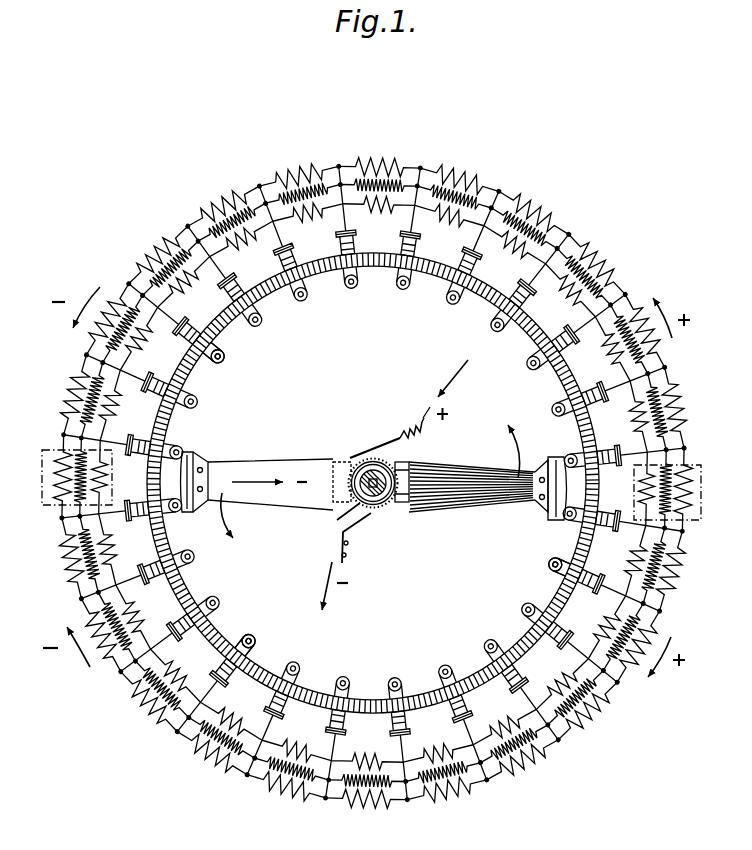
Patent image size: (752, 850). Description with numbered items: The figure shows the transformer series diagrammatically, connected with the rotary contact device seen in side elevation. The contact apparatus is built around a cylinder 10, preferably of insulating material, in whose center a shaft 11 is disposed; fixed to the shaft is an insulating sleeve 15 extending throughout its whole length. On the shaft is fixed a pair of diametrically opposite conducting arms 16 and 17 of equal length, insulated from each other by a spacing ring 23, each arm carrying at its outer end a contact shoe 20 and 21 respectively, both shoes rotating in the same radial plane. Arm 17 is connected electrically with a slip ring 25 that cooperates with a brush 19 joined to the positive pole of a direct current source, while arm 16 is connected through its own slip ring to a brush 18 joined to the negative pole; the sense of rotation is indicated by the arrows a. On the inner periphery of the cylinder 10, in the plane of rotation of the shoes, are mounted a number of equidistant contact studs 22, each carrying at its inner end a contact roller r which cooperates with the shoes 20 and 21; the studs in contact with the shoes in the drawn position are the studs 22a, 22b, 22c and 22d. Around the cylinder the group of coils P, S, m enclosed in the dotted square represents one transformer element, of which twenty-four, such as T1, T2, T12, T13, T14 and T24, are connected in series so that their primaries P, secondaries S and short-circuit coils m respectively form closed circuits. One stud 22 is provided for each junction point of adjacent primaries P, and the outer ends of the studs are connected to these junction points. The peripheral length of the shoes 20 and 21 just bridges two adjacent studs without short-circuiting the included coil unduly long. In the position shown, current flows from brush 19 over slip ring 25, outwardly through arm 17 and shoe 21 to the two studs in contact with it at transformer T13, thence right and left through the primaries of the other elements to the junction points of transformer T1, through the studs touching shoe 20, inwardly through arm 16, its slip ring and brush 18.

The cylinder 10 is at (188, 378).
The contact studs 22 is at (303, 288).
The contact 22a is at (168, 443).
The contact 22b is at (167, 511).
The contact 22c is at (579, 522).
The contact 22d is at (584, 458).
The contact roller r is at (230, 349).
The short-circuit coil m is at (185, 287).
The secondary S is at (178, 247).
The primary P is at (150, 262).
The transformer element T1 is at (43, 467).
The transformer element T2 is at (74, 391).
The transformer element T12 is at (683, 408).
The transformer element T13 is at (702, 481).
The transformer element T14 is at (678, 578).
The transformer element T24 is at (63, 561).
The direction arrow a is at (373, 481).
The shaft 11 is at (390, 459).
The insulating sleeve 15 is at (383, 508).
The conducting arm 16 is at (292, 466).
The conducting arm 17 is at (484, 500).
The brush 18 is at (358, 521).
The brush 19 is at (397, 445).
The contact shoe 20 is at (206, 466).
The contact shoe 21 is at (560, 488).
The spacing ring 23 is at (365, 461).
The slip ring 25 is at (351, 511).